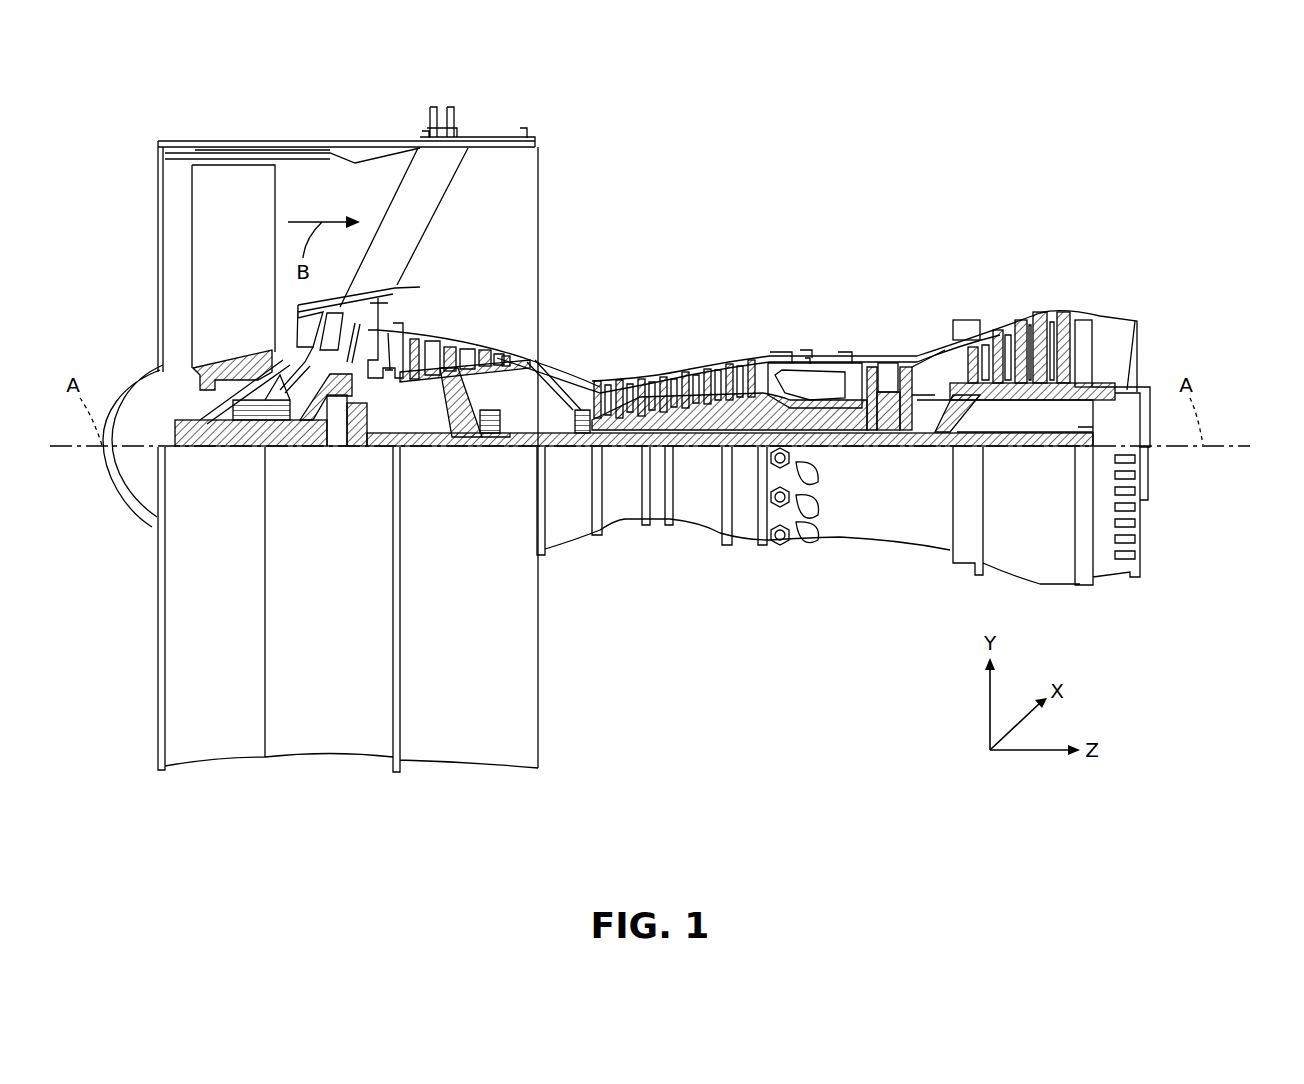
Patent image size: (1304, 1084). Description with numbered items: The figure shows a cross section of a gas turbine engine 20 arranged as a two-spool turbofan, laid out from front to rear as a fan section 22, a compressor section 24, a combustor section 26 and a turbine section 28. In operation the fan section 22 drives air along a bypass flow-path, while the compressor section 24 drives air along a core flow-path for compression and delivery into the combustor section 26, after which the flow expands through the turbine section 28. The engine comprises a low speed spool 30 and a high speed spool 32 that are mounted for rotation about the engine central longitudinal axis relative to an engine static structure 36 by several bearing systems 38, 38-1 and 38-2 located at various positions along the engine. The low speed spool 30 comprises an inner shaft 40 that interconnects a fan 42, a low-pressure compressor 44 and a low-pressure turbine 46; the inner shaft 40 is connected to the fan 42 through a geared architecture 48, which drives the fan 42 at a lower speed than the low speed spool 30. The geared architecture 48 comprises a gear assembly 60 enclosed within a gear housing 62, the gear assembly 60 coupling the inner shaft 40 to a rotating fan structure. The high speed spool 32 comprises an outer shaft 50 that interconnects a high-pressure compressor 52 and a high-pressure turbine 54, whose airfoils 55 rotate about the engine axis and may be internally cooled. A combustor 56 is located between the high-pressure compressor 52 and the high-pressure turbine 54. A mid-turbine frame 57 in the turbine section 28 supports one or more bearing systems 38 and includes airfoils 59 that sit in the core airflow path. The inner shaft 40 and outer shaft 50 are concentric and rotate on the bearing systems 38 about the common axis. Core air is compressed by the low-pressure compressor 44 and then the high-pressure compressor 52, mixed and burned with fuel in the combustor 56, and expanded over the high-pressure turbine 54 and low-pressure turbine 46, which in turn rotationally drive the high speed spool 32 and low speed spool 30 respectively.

The gas turbine engine 20 is at (868, 150).
The fan section 22 is at (370, 124).
The compressor section 24 is at (395, 252).
The combustor section 26 is at (765, 252).
The turbine section 28 is at (1085, 252).
The low speed spool 30 is at (703, 458).
The high speed spool 32 is at (763, 395).
The engine static structure 36 is at (332, 723).
The bearing system 38 is at (935, 448).
The bearing system 38-1 is at (235, 448).
The bearing system 38-2 is at (493, 448).
The inner shaft 40 is at (558, 448).
The fan 42 is at (207, 278).
The low-pressure compressor 44 is at (467, 342).
The low-pressure turbine 46 is at (1020, 318).
The geared architecture 48 is at (352, 458).
The outer shaft 50 is at (810, 425).
The high-pressure compressor 52 is at (714, 408).
The high-pressure turbine 54 is at (882, 360).
The airfoils 55 is at (907, 372).
The combustor 56 is at (828, 357).
The mid-turbine frame 57 is at (942, 362).
The airfoils 59 is at (945, 355).
The gear assembly 60 is at (336, 448).
The gear housing 62 is at (364, 397).